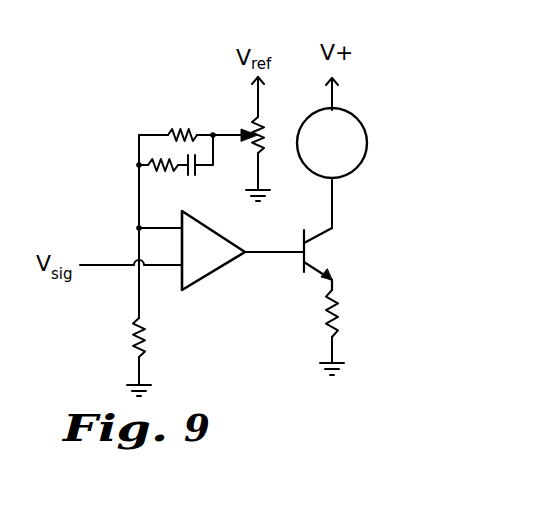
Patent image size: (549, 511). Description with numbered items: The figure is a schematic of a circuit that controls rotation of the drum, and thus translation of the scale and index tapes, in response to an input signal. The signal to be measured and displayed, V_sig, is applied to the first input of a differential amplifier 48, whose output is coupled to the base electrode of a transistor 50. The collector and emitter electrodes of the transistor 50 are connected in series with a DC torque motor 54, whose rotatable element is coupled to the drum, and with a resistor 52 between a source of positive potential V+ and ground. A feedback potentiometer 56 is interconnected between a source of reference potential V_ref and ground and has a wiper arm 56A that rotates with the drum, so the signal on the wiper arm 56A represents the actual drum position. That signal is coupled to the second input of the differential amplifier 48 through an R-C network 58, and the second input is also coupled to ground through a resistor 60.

The differential amplifier 48 is at (204, 279).
The transistor 50 is at (304, 271).
The resistor 52 is at (328, 325).
The DC torque motor 54 is at (345, 114).
The feedback potentiometer 56 is at (262, 122).
The wiper arm 56A is at (223, 133).
The R-C network 58 is at (185, 121).
The resistor 60 is at (133, 339).